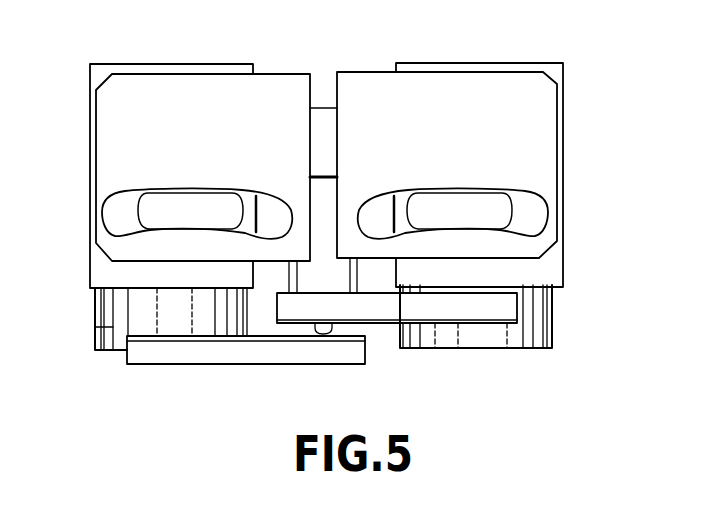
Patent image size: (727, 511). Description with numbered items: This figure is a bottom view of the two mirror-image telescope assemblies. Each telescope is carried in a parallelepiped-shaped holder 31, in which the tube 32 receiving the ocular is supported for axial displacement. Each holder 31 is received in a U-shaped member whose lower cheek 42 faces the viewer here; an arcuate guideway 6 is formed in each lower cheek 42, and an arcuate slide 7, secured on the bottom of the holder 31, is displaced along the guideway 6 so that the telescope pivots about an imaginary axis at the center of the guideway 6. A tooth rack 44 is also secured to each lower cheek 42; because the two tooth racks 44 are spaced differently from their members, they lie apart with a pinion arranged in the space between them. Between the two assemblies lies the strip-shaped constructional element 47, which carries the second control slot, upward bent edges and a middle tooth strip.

The arcuate guideway 6 is at (127, 203).
The arcuate slide 7 is at (180, 202).
The holder 31 is at (100, 267).
The tube 32 is at (113, 328).
The lower cheek 42 is at (228, 110).
The tooth rack 44 is at (253, 353).
The strip-shaped constructional element 47 is at (326, 128).